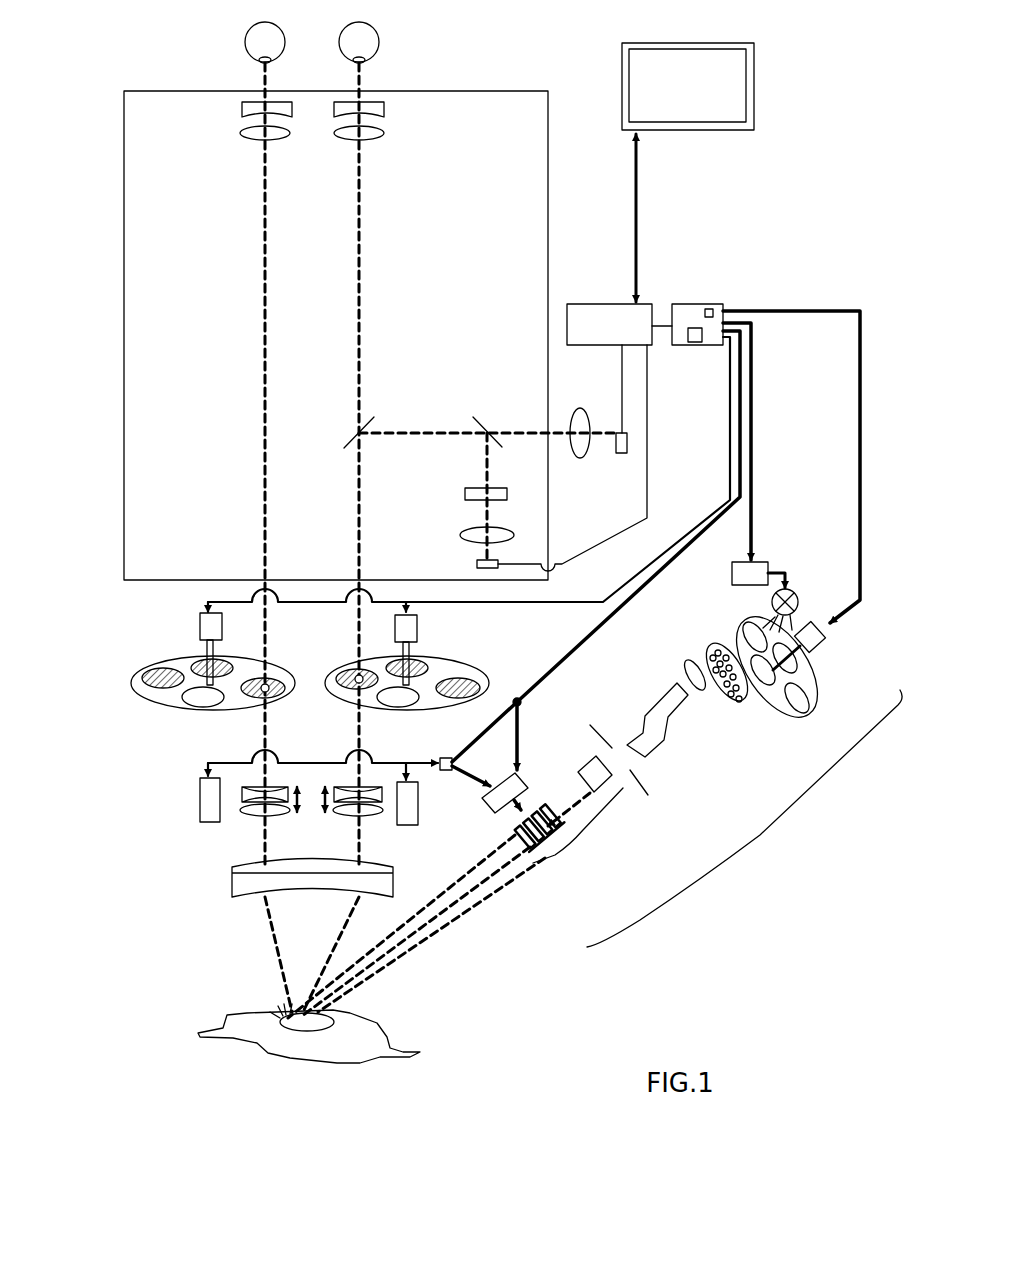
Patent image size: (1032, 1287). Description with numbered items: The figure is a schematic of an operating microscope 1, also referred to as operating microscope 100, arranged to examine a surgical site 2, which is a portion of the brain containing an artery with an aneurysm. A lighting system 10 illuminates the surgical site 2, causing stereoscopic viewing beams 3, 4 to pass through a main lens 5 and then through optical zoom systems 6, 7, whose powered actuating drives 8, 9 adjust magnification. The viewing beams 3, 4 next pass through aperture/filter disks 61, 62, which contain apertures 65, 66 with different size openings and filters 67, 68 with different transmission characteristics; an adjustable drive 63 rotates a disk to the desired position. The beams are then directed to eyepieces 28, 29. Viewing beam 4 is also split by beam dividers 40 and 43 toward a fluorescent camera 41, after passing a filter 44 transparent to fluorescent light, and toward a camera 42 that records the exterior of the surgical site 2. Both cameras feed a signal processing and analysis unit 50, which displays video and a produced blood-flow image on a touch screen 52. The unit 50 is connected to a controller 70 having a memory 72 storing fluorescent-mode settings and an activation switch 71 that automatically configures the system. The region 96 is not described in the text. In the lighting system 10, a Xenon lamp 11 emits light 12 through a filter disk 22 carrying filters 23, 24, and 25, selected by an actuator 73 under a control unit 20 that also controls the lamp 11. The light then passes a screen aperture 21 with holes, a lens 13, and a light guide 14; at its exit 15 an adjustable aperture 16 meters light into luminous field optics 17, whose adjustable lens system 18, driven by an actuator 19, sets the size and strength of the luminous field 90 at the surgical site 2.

The operating microscope 1 is at (106, 188).
The operating microscope 100 is at (124, 310).
The eyepiece 28 is at (237, 100).
The eyepiece 29 is at (402, 100).
The beam divider 40 is at (372, 418).
The beam divider 43 is at (482, 422).
The filter 44 is at (465, 494).
The fluorescent camera 41 is at (477, 564).
The camera 42 is at (628, 449).
The housing 96 is at (548, 577).
The touch screen 52 is at (642, 75).
The signal processing and analysis unit 50 is at (592, 308).
The controller 70 is at (687, 307).
The activation switch 71 is at (693, 344).
The memory 72 is at (713, 308).
The adjustable drive 63 is at (200, 622).
The aperture/filter disk 61 is at (138, 658).
The aperture/filter disk 62 is at (348, 660).
The filter 68 is at (190, 660).
The filter 67 is at (146, 688).
The aperture 65 is at (340, 685).
The aperture 66 is at (193, 702).
The powered actuating drive 8 is at (200, 791).
The optical zoom system 7 is at (378, 828).
The optical zoom system 6 is at (232, 828).
The viewing beam 3 is at (265, 837).
The viewing beam 4 is at (353, 828).
The main lens 5 is at (232, 880).
The powered actuating drive 9 is at (420, 812).
The actuator 19 is at (502, 788).
The adjustable lens system 18 is at (540, 800).
The luminous field optics 17 is at (587, 833).
The aperture 16 is at (650, 787).
The exit 15 is at (632, 768).
The light guide 14 is at (650, 712).
The lens 13 is at (698, 690).
The screen aperture 21 is at (740, 700).
The filter disk 22 is at (808, 688).
The filter 23 is at (745, 640).
The filter 24 is at (760, 687).
The filter 25 is at (800, 720).
The actuator 73 is at (825, 643).
The control unit 20 is at (732, 572).
The Xenon lamp 11 is at (798, 592).
The light 12 is at (772, 607).
The lighting system 10 is at (760, 835).
The surgical site 2 is at (373, 1050).
The luminous field 90 is at (315, 1023).